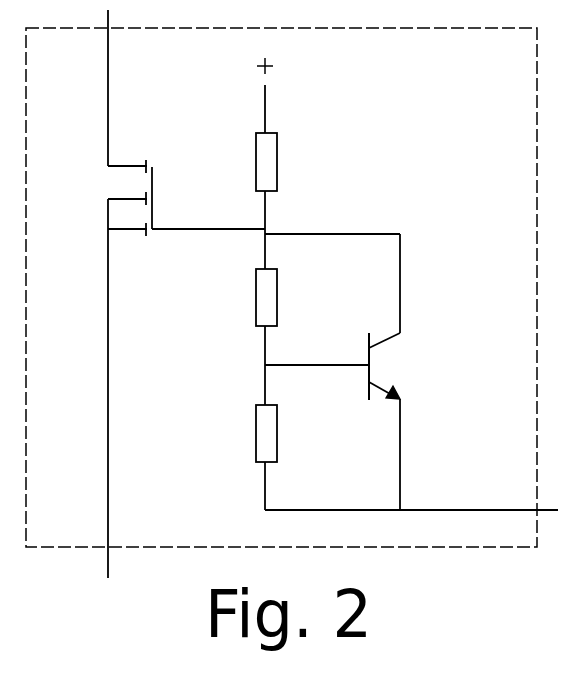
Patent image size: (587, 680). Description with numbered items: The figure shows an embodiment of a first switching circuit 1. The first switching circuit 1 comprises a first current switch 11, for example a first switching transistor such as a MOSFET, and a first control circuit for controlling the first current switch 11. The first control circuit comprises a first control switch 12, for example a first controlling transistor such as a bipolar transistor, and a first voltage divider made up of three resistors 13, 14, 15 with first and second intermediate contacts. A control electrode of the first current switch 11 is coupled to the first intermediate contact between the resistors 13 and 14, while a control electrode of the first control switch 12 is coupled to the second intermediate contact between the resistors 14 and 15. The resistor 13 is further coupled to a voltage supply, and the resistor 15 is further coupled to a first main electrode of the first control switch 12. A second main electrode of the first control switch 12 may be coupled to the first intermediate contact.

The first switching circuit 1 is at (512, 547).
The first current switch 11 is at (163, 198).
The first control switch 12 is at (401, 421).
The resistor 13 is at (287, 162).
The resistor 14 is at (287, 297).
The resistor 15 is at (287, 433).